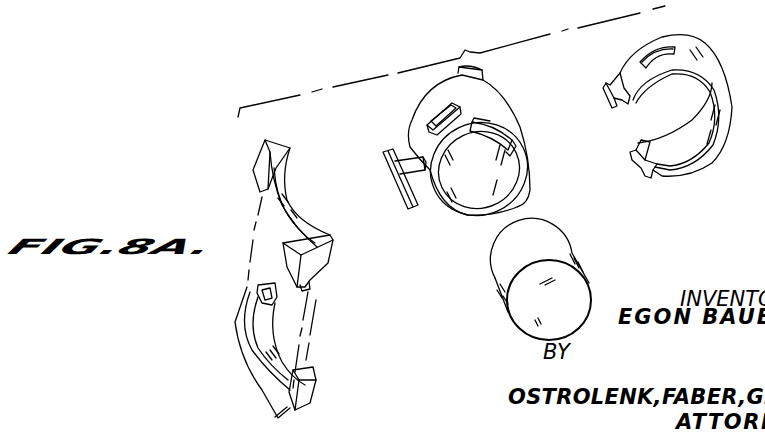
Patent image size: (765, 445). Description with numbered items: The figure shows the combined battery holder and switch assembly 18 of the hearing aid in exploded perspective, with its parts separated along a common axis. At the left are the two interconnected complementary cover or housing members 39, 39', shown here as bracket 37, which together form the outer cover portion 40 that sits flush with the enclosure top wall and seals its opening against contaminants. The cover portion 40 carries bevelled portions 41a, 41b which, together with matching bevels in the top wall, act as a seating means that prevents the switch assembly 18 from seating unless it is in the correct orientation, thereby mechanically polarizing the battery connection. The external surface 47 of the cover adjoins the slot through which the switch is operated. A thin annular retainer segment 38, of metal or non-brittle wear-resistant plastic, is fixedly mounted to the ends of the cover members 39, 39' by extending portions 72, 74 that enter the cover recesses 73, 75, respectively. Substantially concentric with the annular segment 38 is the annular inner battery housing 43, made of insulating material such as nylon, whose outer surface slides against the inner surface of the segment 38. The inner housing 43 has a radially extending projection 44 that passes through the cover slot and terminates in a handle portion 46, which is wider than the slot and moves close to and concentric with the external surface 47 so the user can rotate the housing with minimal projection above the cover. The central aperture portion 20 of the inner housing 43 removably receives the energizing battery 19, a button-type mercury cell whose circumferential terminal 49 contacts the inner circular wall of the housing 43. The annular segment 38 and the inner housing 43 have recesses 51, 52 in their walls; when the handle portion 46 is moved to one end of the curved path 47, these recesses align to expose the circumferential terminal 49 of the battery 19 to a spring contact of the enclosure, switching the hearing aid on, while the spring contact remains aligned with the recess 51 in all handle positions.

The switch assembly 18 is at (451, 61).
The energizing battery 19 is at (518, 268).
The central aperture portion 20 is at (492, 145).
The segment assembly 37 is at (229, 211).
The annular retainer segment 38 is at (656, 111).
The cover member 39 is at (294, 262).
The cover member 39' is at (309, 346).
The cover portion 40 is at (262, 166).
The bevelled portion 41a is at (305, 257).
The bevelled portion 41b is at (268, 143).
The inner battery housing 43 is at (461, 160).
The radially extending projection 44 is at (407, 150).
The handle portion 46 is at (401, 190).
The external surface 47 is at (277, 224).
The circumferential terminal 49 is at (536, 248).
The recess 51 is at (652, 58).
The recess 52 is at (432, 115).
The extending portion 72 is at (618, 102).
The cover recess 73 is at (268, 279).
The extending portion 74 is at (644, 180).
The cover recess 75 is at (296, 406).